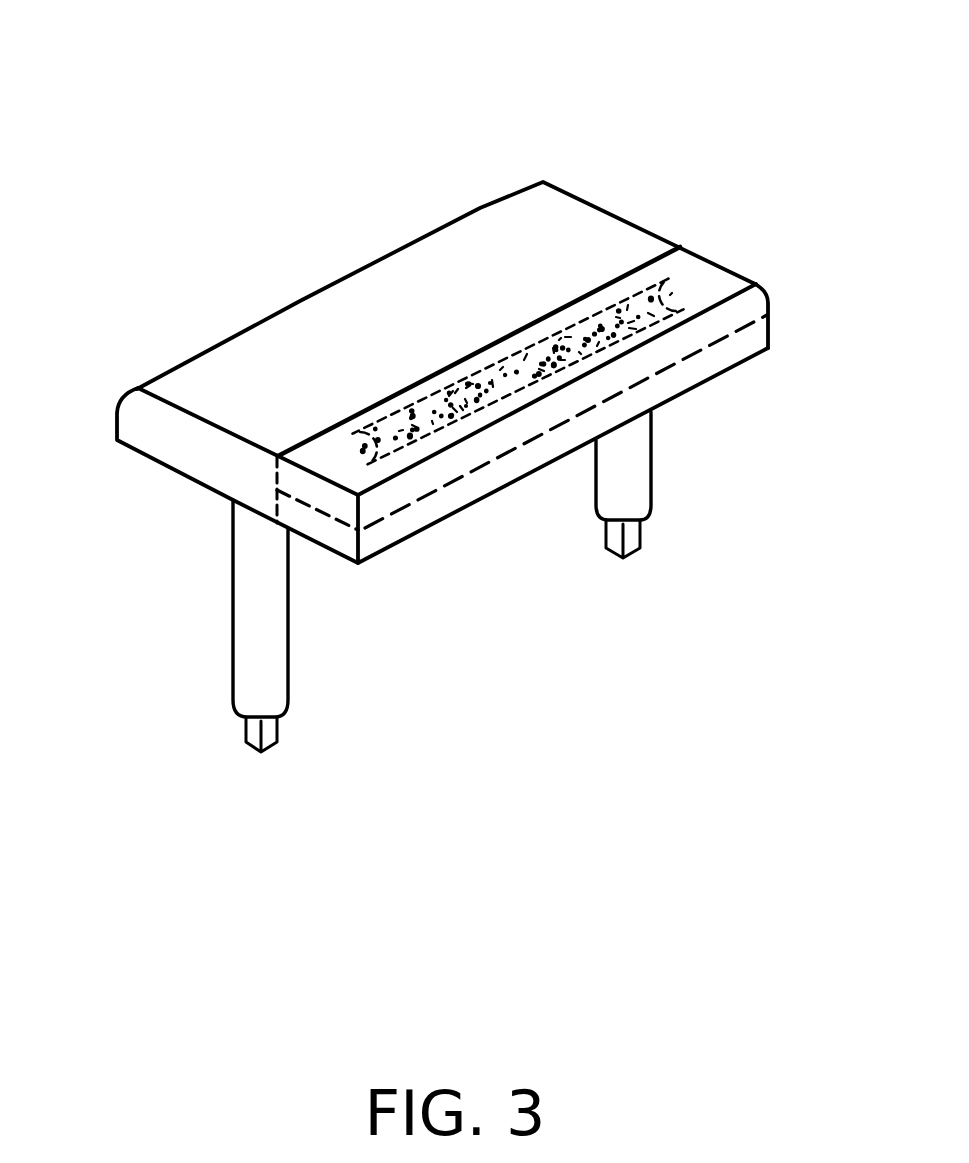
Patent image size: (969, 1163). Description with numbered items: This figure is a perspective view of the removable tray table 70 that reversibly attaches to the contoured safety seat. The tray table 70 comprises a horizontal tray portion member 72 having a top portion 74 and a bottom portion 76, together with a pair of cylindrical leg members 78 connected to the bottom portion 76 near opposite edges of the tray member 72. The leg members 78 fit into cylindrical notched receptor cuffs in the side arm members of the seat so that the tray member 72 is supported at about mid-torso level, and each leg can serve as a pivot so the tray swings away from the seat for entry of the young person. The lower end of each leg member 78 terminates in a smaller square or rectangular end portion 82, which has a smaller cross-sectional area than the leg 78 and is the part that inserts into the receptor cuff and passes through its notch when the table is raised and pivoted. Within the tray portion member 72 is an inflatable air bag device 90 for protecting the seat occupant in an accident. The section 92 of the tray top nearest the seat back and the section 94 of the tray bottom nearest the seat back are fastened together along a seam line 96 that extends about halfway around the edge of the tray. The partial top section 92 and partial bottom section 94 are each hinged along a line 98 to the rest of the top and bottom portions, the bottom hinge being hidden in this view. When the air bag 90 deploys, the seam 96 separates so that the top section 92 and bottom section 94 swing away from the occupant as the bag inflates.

The tray table 70 is at (596, 88).
The horizontal tray portion member 72 is at (612, 208).
The top portion 74 is at (300, 367).
The bottom portion 76 is at (148, 458).
The cylindrical leg members 78 is at (252, 610).
The end portion 82 is at (245, 730).
The inflatable air bag device 90 is at (427, 425).
The top section 92 is at (705, 283).
The bottom section 94 is at (537, 453).
The seam line 96 is at (718, 340).
The hinge line 98 is at (437, 367).